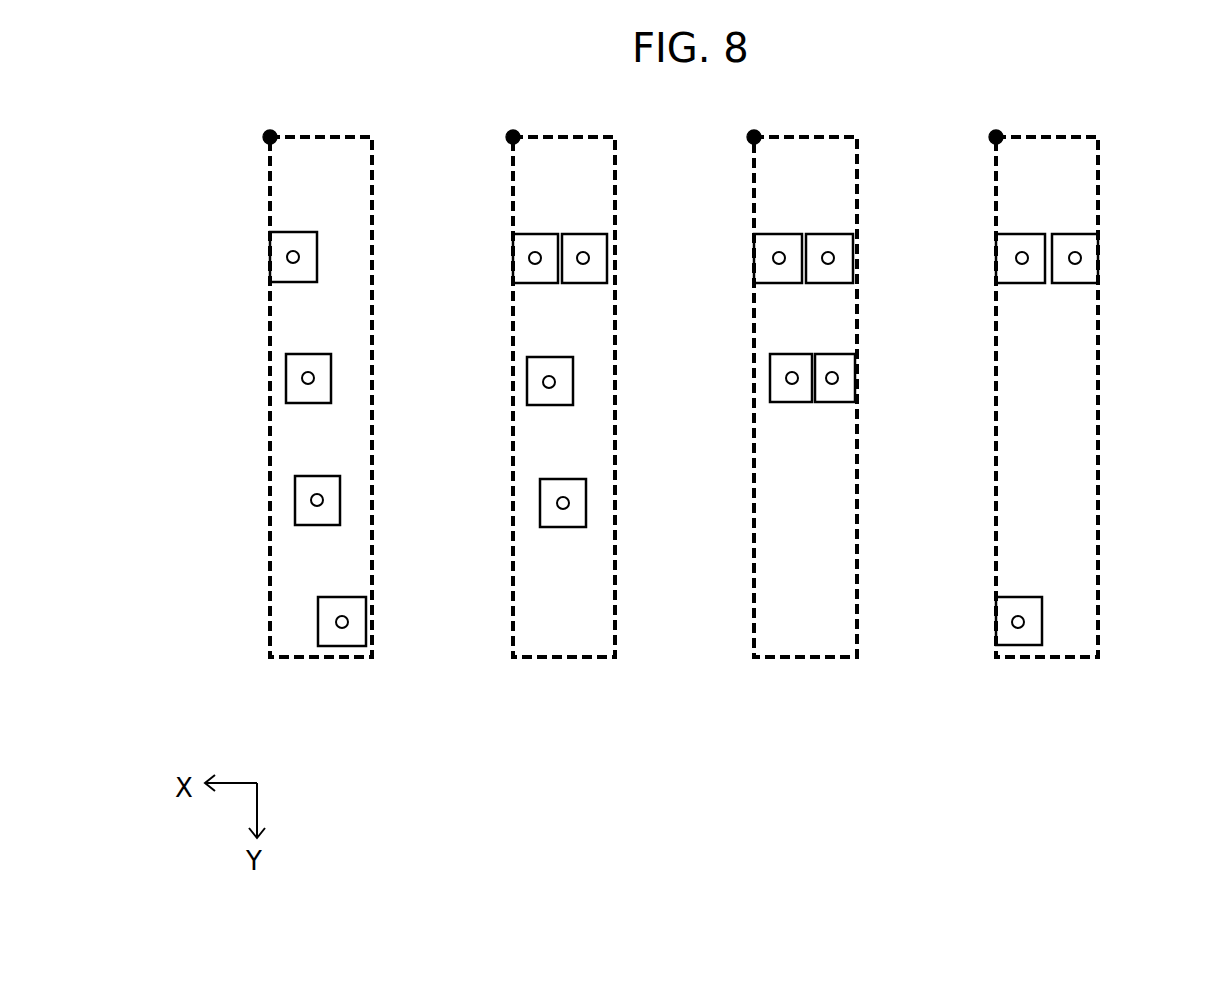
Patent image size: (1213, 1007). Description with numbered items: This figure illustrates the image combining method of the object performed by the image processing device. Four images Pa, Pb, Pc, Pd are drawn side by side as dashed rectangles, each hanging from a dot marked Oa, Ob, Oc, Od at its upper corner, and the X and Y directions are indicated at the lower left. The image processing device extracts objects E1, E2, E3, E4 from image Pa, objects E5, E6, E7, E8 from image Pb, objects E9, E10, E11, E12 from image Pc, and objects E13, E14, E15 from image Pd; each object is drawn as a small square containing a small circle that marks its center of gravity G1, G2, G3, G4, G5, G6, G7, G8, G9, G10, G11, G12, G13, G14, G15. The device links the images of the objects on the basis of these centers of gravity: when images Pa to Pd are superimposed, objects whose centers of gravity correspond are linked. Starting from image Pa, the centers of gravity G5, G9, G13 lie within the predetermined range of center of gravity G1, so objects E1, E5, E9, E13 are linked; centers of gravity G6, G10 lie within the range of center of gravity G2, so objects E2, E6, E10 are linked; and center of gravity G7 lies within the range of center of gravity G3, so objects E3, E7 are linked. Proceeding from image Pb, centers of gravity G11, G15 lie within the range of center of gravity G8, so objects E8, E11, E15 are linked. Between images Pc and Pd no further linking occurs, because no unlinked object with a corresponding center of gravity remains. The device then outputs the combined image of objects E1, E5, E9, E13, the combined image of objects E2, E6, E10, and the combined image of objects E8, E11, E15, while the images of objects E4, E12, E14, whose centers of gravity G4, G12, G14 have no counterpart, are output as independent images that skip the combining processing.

The origin of pixel region Pa Oa is at (268, 137).
The origin of pixel region Pb Ob is at (511, 137).
The origin of pixel region Pc Oc is at (752, 137).
The origin of pixel region Pd Od is at (994, 137).
The image Pa is at (312, 663).
The image Pb is at (562, 661).
The image Pc is at (802, 661).
The image Pd is at (1045, 661).
The object E1 is at (300, 282).
The object E2 is at (315, 403).
The object E3 is at (325, 525).
The object E4 is at (366, 644).
The object E5 is at (528, 283).
The object E6 is at (545, 405).
The object E7 is at (560, 527).
The object E8 is at (590, 283).
The object E9 is at (770, 283).
The object E10 is at (787, 402).
The object E11 is at (840, 283).
The object E12 is at (842, 402).
The object E13 is at (1014, 283).
The object E14 is at (1020, 645).
The object E15 is at (1075, 283).
The center of gravity G1 is at (287, 257).
The center of gravity G2 is at (302, 378).
The center of gravity G3 is at (311, 500).
The center of gravity G4 is at (348, 622).
The center of gravity G5 is at (529, 258).
The center of gravity G6 is at (543, 382).
The center of gravity G7 is at (557, 503).
The center of gravity G8 is at (589, 258).
The center of gravity G9 is at (773, 258).
The center of gravity G10 is at (786, 378).
The center of gravity G11 is at (834, 258).
The center of gravity G12 is at (838, 378).
The center of gravity G13 is at (1016, 258).
The center of gravity G14 is at (1012, 622).
The center of gravity G15 is at (1081, 258).